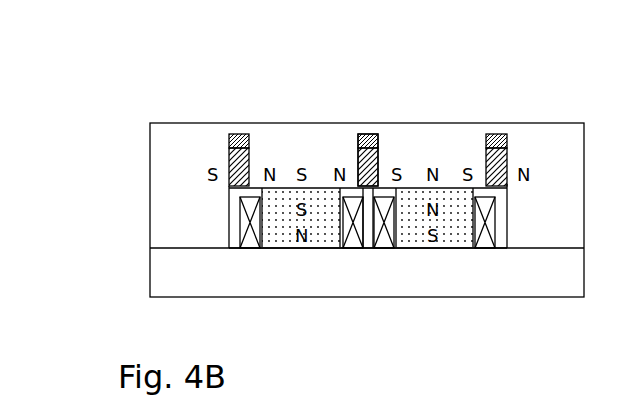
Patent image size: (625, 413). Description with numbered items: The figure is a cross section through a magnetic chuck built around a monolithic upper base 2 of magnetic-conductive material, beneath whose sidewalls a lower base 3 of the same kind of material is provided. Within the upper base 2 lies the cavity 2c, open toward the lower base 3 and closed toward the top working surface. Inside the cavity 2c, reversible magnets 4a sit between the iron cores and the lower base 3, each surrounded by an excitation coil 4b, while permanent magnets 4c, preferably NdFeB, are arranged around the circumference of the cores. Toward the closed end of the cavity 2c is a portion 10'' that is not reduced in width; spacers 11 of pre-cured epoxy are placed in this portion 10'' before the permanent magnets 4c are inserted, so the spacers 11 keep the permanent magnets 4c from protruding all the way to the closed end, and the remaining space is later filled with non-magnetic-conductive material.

The upper base 2 is at (183, 136).
The lower base 3 is at (233, 267).
The reversible magnets 4a is at (233, 250).
The excitation coil 4b is at (230, 227).
The permanent magnets 4c is at (206, 163).
The cavity 2c is at (236, 193).
The spacers 11 is at (360, 136).
The portion of the cavity 10'' is at (409, 114).